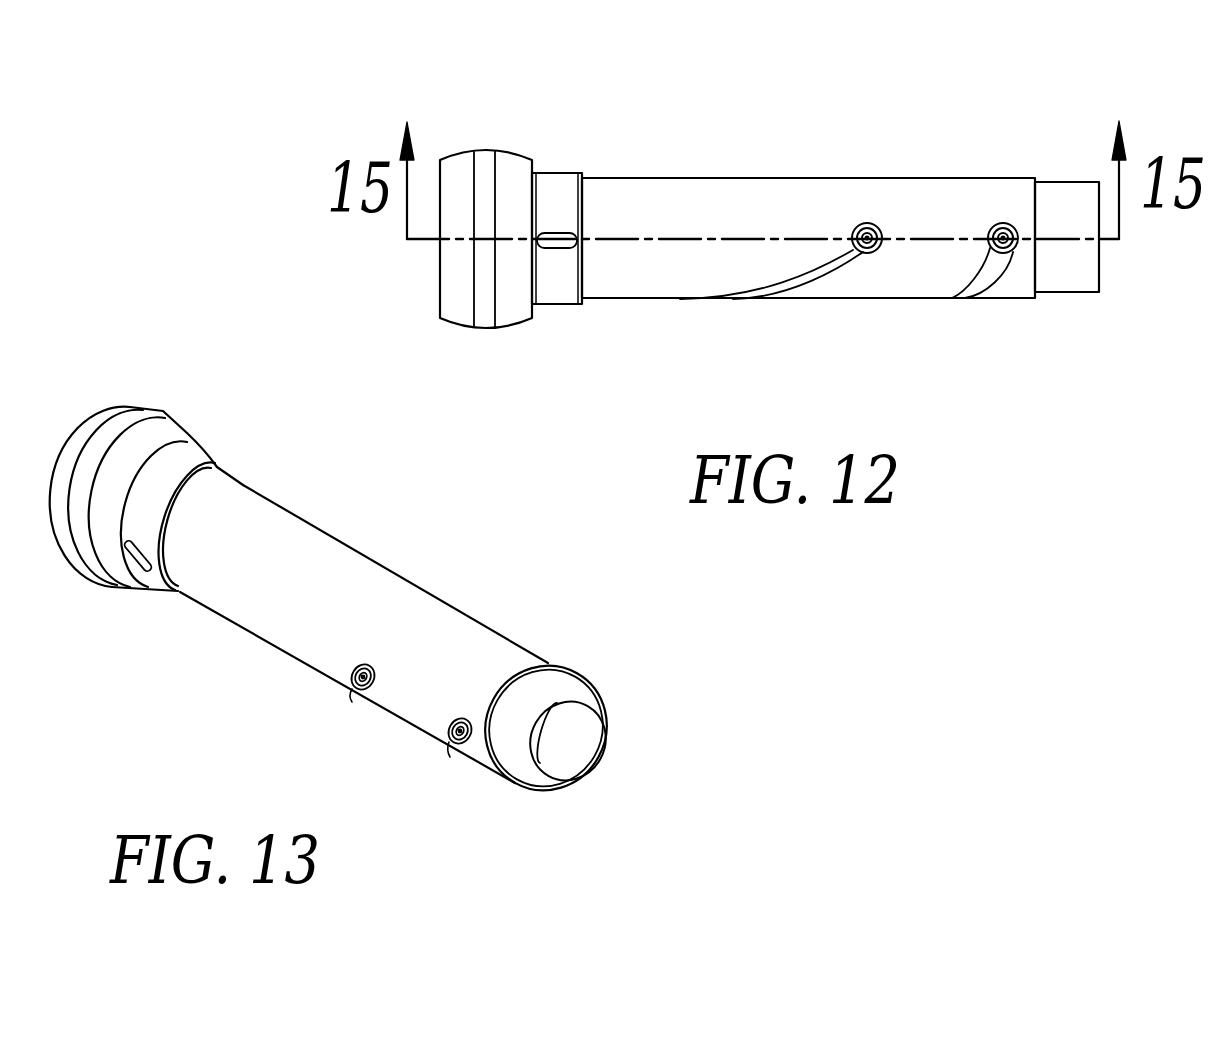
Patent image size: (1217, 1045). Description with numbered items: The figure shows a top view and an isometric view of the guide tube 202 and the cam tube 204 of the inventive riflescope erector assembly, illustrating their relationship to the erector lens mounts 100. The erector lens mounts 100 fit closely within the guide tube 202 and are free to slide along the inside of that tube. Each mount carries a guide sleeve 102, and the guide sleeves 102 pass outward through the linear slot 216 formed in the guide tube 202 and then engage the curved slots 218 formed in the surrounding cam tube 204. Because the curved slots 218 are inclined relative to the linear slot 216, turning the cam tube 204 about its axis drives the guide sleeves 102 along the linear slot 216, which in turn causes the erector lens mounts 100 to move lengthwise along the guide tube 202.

In FIG. 13, the erector lens mount 100 is at (548, 758).
In FIG. 12, the guide sleeve 102 is at (866, 254).
In FIG. 13, the guide sleeve 102 is at (357, 692).
In FIG. 12, the guide tube 202 is at (1067, 181).
In FIG. 13, the guide tube 202 is at (585, 677).
In FIG. 12, the cam tube 204 is at (830, 178).
In FIG. 13, the cam tube 204 is at (327, 530).
In FIG. 12, the linear slot 216 is at (852, 254).
In FIG. 12, the curved slot 218 is at (823, 285).
In FIG. 13, the curved slot 218 is at (338, 687).